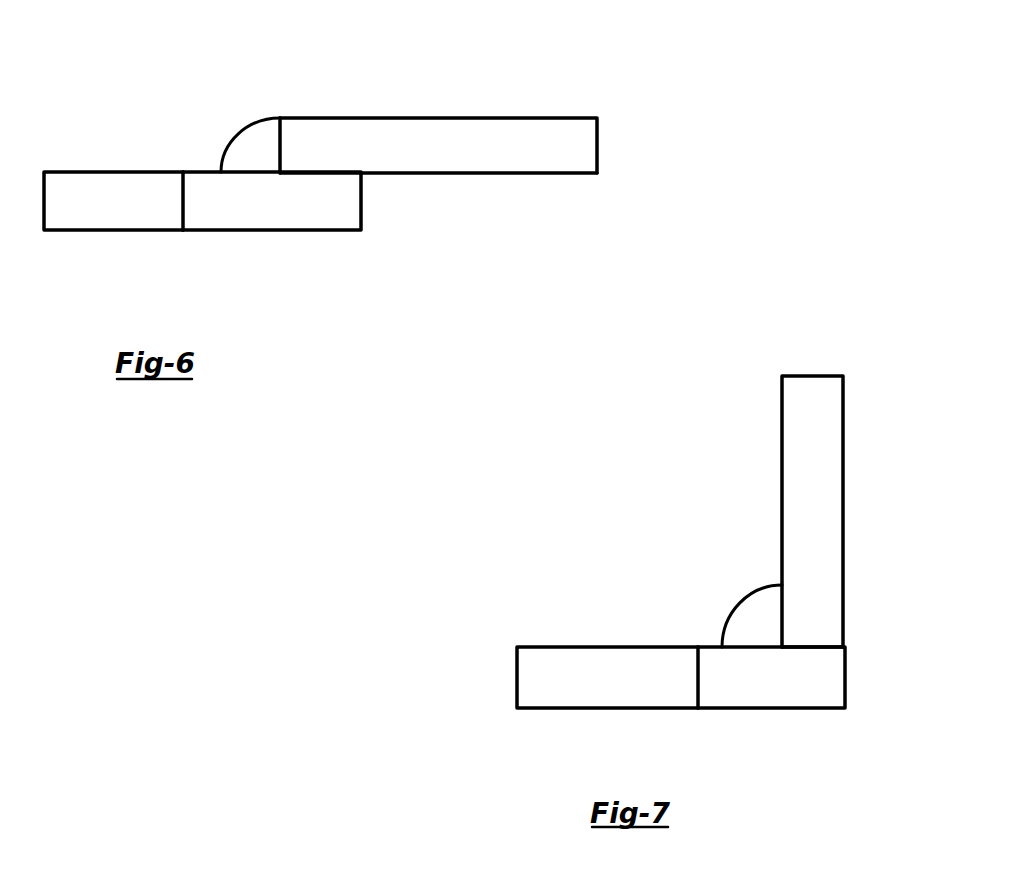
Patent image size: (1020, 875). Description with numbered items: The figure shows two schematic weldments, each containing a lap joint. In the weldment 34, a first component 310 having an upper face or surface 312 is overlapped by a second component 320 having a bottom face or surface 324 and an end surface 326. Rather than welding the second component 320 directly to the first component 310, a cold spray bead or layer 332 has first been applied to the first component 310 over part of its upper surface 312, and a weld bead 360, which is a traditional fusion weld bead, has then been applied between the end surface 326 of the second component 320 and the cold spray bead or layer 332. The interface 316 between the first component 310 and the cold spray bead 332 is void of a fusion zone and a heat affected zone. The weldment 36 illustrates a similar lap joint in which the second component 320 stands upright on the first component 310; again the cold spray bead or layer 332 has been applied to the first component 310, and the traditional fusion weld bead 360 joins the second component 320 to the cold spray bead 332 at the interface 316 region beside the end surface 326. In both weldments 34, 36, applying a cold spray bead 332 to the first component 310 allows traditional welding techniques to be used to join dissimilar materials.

In FIG. 6, the weldment 34 is at (310, 161).
In FIG. 7, the weldment 36 is at (683, 546).
In FIG. 6, the first component 310 is at (192, 209).
In FIG. 7, the first component 310 is at (655, 682).
In FIG. 6, the upper face or surface 312 is at (92, 171).
In FIG. 7, the upper face or surface 312 is at (570, 645).
In FIG. 6, the interface 316 is at (181, 203).
In FIG. 7, the interface 316 is at (697, 678).
In FIG. 6, the second component 320 is at (438, 138).
In FIG. 7, the second component 320 is at (842, 472).
In FIG. 6, the bottom face or surface 324 is at (463, 177).
In FIG. 6, the end surface 326 is at (281, 138).
In FIG. 7, the end surface 326 is at (812, 645).
In FIG. 6, the cold spray bead or layer 332 is at (268, 232).
In FIG. 7, the cold spray bead or layer 332 is at (787, 712).
In FIG. 6, the weld bead 360 is at (233, 140).
In FIG. 7, the weld bead 360 is at (738, 602).